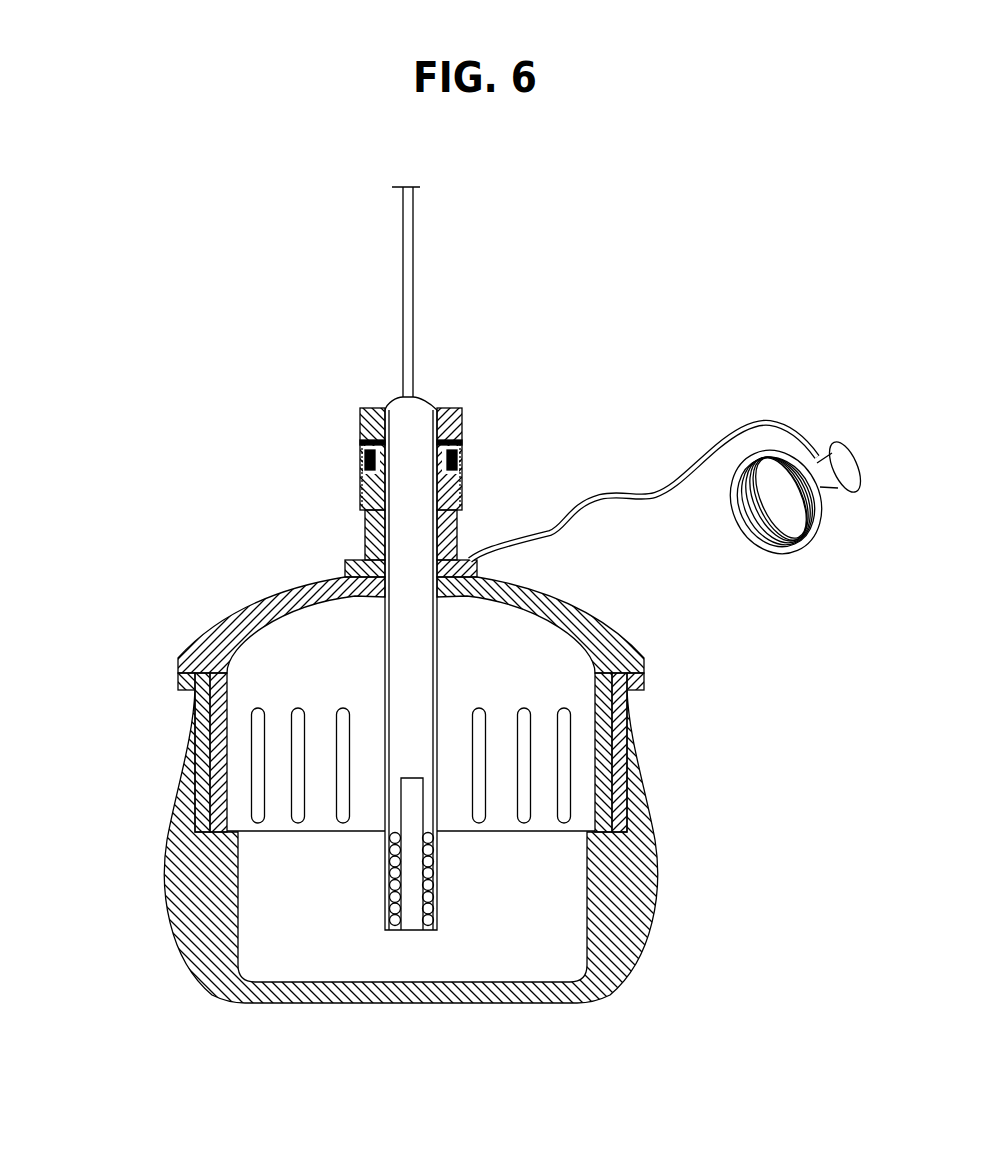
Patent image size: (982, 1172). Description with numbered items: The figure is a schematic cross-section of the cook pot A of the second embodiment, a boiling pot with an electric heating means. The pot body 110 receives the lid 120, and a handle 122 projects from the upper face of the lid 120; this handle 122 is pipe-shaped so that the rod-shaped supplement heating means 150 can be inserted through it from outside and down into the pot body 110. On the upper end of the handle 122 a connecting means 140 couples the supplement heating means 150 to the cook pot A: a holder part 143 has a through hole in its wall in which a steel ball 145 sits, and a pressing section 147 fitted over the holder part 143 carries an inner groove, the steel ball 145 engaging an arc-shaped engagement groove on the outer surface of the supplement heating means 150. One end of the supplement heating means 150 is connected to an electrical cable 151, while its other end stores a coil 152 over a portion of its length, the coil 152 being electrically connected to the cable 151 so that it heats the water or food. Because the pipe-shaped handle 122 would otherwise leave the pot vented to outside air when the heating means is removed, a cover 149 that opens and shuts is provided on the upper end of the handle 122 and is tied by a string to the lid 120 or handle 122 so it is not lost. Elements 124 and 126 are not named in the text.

The pot body 110 is at (618, 918).
The lid 120 is at (553, 601).
The handle 122 is at (452, 540).
The inner wall of cap 124 is at (218, 732).
The slots 126 is at (260, 787).
The connecting means 140 is at (370, 448).
The holder part 143 is at (360, 432).
The steel ball 145 is at (362, 445).
The pressing section 147 is at (370, 410).
The cover 149 is at (817, 507).
The supplement heating means 150 is at (415, 722).
The electrical cable 151 is at (408, 278).
The coil 152 is at (432, 862).
The cook pot A is at (168, 587).